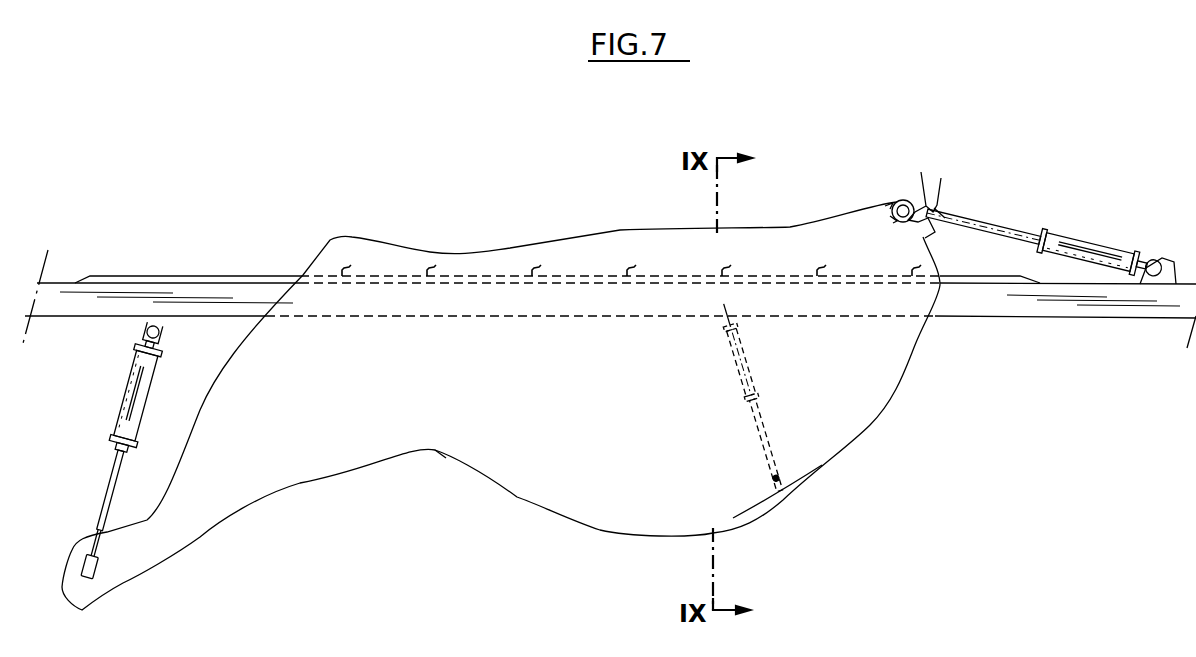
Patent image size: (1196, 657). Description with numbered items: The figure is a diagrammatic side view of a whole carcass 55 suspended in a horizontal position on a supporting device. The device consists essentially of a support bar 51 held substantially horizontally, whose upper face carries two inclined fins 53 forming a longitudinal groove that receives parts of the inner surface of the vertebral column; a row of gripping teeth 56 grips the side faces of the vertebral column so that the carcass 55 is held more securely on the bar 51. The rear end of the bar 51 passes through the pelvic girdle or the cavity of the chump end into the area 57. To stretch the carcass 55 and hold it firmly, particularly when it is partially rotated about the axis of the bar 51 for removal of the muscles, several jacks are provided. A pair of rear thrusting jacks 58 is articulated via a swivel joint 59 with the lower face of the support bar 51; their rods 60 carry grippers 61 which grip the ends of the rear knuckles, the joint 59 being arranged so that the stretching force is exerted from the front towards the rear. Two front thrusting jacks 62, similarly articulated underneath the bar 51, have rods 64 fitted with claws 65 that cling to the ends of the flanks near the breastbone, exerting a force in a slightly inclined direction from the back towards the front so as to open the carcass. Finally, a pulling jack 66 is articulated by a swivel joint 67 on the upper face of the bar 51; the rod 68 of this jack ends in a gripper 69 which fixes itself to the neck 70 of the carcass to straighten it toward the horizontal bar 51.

The support bar 51 is at (1016, 303).
The inclined fins 53 is at (963, 282).
The whole carcass 55 is at (518, 512).
The gripping teeth 56 is at (632, 275).
The area of the pelvic girdle 57 is at (288, 245).
The rear thrusting jacks 58 is at (133, 389).
The swivel joint 59 is at (152, 326).
The rods of the rear jacks 60 is at (112, 478).
The grippers 61 is at (100, 572).
The front thrusting jacks 62 is at (738, 368).
The rods of the front jacks 64 is at (766, 450).
The claws 65 is at (790, 493).
The pulling jack 66 is at (1087, 246).
The swivel joint 67 is at (1150, 260).
The rod of the pulling jack 68 is at (991, 226).
The gripper 69 is at (908, 198).
The neck 70 is at (878, 237).